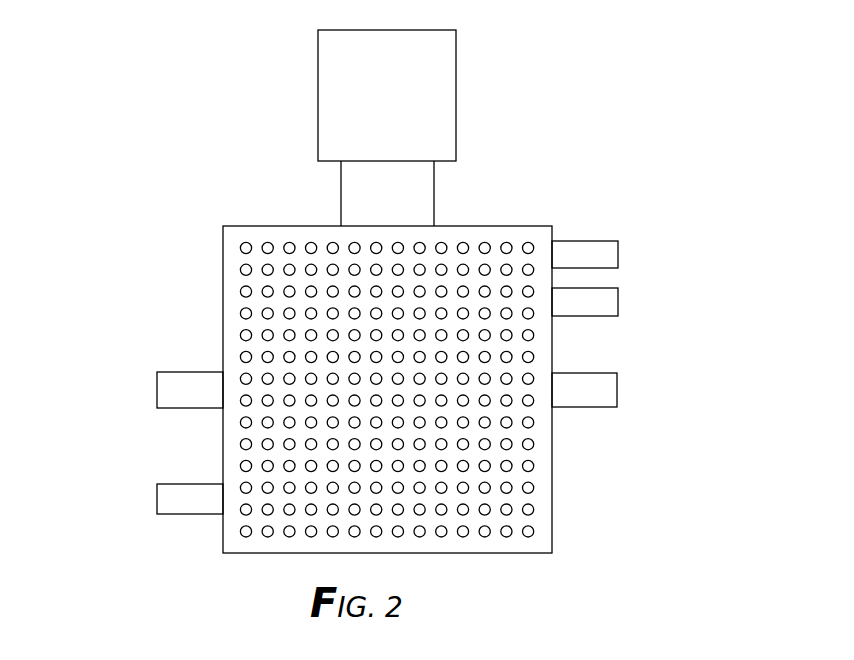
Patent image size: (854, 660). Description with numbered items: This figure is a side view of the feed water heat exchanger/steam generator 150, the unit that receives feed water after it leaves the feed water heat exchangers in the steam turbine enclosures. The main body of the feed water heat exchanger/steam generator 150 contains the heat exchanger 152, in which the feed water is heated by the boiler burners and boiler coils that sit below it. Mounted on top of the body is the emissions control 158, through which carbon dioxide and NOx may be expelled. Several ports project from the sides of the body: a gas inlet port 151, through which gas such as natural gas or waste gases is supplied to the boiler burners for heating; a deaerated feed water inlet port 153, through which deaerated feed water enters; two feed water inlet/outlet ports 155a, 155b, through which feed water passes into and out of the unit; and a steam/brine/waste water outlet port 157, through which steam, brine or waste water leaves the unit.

The feed water heat exchanger/steam generator 150 is at (563, 218).
The gas inlet port 151 is at (157, 500).
The heat exchanger 152 is at (510, 404).
The deaerated feed water inlet port 153 is at (157, 385).
The feed water inlet/outlet port 155a is at (618, 254).
The feed water inlet/outlet port 155b is at (618, 302).
The steam/brine/waste water outlet port 157 is at (617, 392).
The emissions control 158 is at (456, 66).